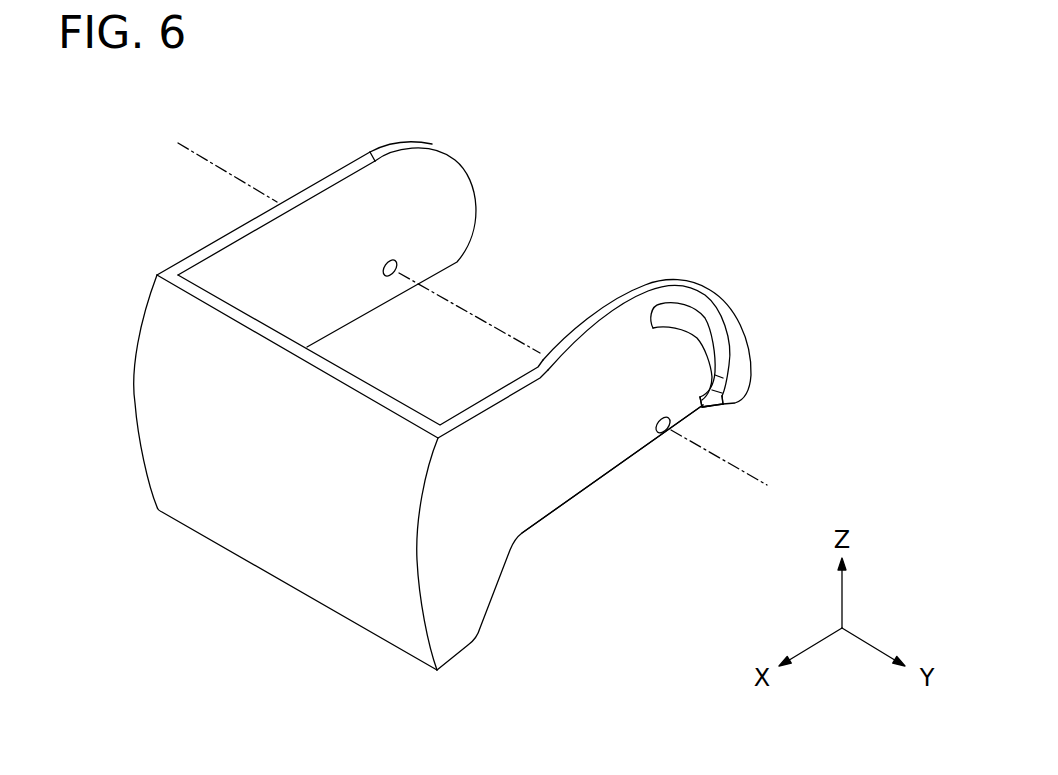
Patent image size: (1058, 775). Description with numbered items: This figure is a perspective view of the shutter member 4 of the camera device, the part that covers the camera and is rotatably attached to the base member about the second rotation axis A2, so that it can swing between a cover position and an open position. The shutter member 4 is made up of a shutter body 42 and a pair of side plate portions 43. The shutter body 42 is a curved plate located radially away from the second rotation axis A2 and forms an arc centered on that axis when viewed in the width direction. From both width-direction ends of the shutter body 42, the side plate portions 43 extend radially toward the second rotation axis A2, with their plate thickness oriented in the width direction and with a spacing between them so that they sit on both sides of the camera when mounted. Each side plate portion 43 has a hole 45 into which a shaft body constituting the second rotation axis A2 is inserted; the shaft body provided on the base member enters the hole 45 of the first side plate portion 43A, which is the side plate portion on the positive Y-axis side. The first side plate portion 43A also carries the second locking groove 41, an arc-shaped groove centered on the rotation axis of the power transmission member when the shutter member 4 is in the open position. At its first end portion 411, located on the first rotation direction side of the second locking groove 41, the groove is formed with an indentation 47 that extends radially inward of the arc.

The shutter member 4 is at (466, 377).
The second locking groove 41 is at (699, 308).
The first end portion 411 is at (722, 402).
The shutter body 42 is at (282, 530).
The side plate portion 43 is at (317, 180).
The first side plate portion 43A is at (583, 503).
The hole 45 is at (397, 250).
The indentation 47 is at (708, 406).
The second rotation axis A2 is at (483, 317).